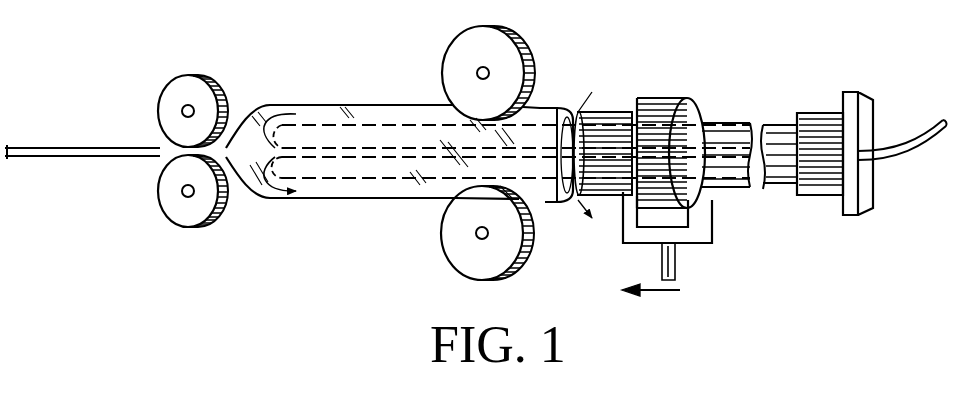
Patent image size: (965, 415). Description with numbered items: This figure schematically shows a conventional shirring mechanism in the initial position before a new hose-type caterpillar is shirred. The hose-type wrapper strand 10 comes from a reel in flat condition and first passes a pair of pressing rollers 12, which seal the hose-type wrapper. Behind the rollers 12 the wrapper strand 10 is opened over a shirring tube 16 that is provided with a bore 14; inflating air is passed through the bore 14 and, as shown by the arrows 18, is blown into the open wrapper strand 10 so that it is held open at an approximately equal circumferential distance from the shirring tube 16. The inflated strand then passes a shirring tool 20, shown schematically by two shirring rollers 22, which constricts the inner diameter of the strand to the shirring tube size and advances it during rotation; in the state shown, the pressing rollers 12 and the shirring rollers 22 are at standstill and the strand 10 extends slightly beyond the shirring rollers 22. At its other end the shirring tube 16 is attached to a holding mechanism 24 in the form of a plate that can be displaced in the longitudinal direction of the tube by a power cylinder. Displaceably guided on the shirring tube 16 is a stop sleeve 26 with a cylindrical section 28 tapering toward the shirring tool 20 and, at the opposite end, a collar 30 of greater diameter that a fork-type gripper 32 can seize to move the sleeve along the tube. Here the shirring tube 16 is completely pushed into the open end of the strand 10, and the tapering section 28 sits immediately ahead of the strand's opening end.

The hose-type wrapper strand 10 is at (62, 157).
The pressing rollers 12 is at (193, 217).
The bore 14 is at (340, 155).
The shirring tube 16 is at (372, 182).
The arrows 18 is at (275, 198).
The shirring tool 20 is at (543, 49).
The shirring rollers 22 is at (455, 55).
The holding mechanism 24 is at (860, 175).
The stop sleeve 26 is at (648, 92).
The cylindrical section 28 is at (598, 110).
The collar 30 is at (683, 97).
The fork-type gripper 32 is at (712, 228).